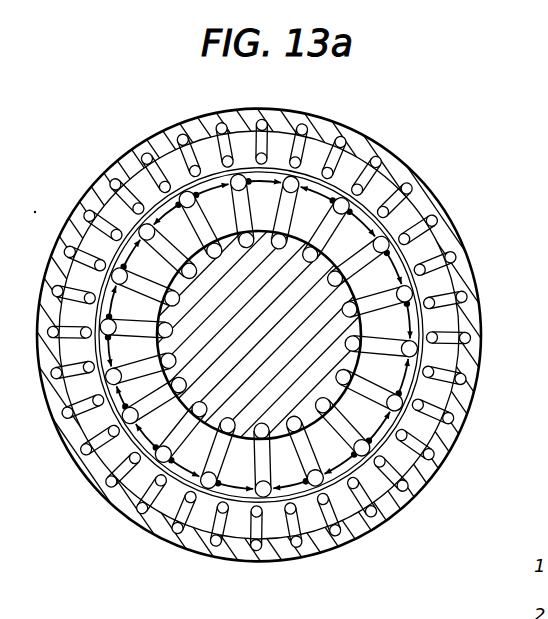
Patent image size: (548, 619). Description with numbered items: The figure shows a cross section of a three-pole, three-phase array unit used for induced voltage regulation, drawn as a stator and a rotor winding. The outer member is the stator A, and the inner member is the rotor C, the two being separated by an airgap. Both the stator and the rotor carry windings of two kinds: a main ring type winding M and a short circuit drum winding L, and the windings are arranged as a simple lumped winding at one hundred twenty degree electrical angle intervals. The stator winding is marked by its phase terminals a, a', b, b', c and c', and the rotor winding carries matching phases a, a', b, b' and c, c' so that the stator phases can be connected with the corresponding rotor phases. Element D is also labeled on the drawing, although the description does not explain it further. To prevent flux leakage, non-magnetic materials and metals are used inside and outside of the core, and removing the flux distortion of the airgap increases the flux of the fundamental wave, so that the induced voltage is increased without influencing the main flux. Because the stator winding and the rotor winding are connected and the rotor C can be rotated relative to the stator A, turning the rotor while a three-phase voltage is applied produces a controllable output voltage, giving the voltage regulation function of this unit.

The stator A is at (19, 189).
The rotor C is at (137, 167).
The short circuit drum winding L is at (259, 313).
The stator tooth / yoke D is at (274, 309).
The main ring type winding M is at (473, 352).
The winding phase a is at (297, 181).
The winding phase b is at (367, 454).
The winding phase c is at (106, 376).
The winding phase a' is at (407, 414).
The winding phase b' is at (130, 425).
The winding phase c' is at (255, 179).